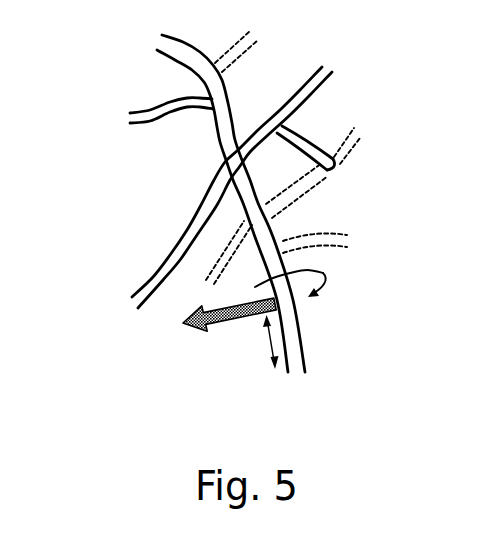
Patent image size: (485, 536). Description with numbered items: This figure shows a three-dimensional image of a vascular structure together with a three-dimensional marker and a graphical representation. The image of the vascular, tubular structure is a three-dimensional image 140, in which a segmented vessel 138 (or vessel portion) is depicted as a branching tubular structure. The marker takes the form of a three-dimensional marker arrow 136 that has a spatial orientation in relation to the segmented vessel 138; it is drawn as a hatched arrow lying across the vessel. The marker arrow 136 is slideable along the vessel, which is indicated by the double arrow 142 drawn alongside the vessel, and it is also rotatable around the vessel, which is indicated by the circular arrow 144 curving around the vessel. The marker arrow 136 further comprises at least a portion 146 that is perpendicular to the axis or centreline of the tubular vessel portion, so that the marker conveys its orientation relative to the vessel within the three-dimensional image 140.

The 3D-marker arrow 136 is at (215, 328).
The segmented vessel 138 is at (292, 333).
The 3D-image 140 is at (133, 169).
The double arrow 142 is at (267, 357).
The circular arrow 144 is at (323, 273).
The portion perpendicular to the tubular's portion axis 146 is at (254, 314).